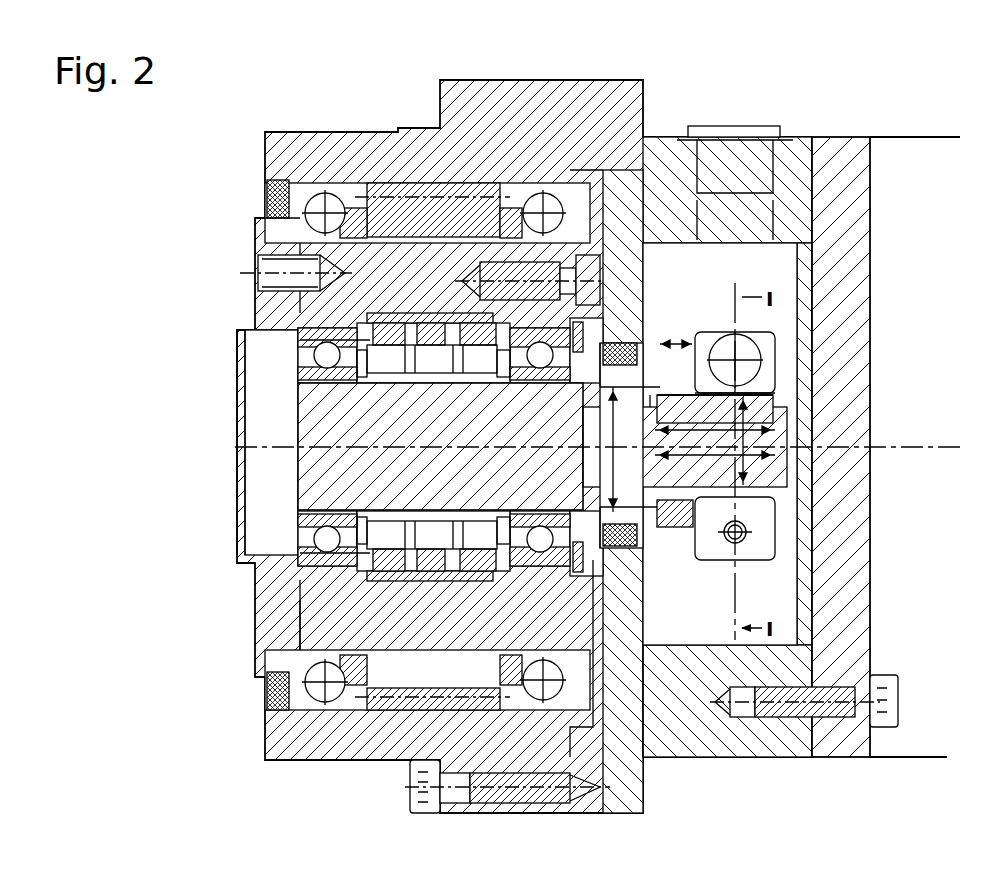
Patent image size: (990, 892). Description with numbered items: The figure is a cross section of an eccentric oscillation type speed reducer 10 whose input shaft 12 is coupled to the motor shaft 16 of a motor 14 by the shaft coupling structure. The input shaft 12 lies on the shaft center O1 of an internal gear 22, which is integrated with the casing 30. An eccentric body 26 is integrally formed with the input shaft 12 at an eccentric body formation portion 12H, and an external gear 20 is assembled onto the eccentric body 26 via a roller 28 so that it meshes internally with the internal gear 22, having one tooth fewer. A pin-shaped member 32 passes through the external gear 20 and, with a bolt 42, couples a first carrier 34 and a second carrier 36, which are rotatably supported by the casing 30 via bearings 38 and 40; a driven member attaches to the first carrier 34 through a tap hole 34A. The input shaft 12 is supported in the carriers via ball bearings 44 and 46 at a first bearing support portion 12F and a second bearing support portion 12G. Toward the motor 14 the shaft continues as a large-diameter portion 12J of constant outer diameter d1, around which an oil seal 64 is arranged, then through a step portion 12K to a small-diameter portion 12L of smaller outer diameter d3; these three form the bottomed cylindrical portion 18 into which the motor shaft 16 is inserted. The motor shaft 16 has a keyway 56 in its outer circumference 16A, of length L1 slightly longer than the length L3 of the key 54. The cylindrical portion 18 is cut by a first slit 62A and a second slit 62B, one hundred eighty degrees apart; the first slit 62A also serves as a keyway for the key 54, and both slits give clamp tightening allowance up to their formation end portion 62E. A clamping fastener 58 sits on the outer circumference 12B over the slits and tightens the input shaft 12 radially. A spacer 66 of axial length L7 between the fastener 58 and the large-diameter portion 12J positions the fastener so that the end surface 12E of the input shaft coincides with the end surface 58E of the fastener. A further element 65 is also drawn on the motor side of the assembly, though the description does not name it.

The speed reducer 10 is at (845, 110).
The input shaft 12 is at (612, 660).
The outer circumference 12B is at (760, 520).
The end surface 12E is at (755, 500).
The first bearing support portion 12F is at (360, 545).
The second bearing support portion 12G is at (560, 500).
The eccentric body formation portion 12H is at (380, 520).
The large-diameter portion 12J is at (480, 370).
The step portion 12K is at (715, 330).
The small-diameter portion 12L is at (770, 380).
The motor 14 is at (905, 145).
The motor shaft 16 is at (745, 460).
The outer circumference 16A is at (622, 488).
The cylindrical portion 18 is at (630, 640).
The external gear 20 is at (470, 720).
The internal gear 22 is at (352, 740).
The eccentric body 26 is at (420, 358).
The roller 28 is at (420, 535).
The casing 30 is at (318, 762).
The pin-shaped member 32 is at (425, 260).
The first carrier 34 is at (262, 316).
The tap hole 34A is at (262, 270).
The second carrier 36 is at (608, 340).
The bearing 38 is at (320, 208).
The bearing 40 is at (550, 310).
The bolt 42 is at (578, 322).
The ball bearing 44 is at (240, 368).
The ball bearing 46 is at (490, 270).
The key 54 is at (775, 400).
The keyway 56 is at (770, 418).
The clamping fastener 58 is at (760, 332).
The end surface 58E is at (730, 540).
The first slit 62A is at (654, 560).
The second slit 62B is at (804, 560).
The formation end portion 62E is at (698, 690).
The oil seal 64 is at (655, 640).
The fastening bolt 65 is at (780, 710).
The spacer 66 is at (768, 400).
The shaft center O1 is at (230, 447).
The length of keyway L1 is at (778, 430).
The length of key L3 is at (778, 455).
The axial length of spacer L7 is at (716, 330).
The outer diameter of large-diameter portion d1 is at (675, 342).
The outer diameter of small-diameter portion d3 is at (745, 445).